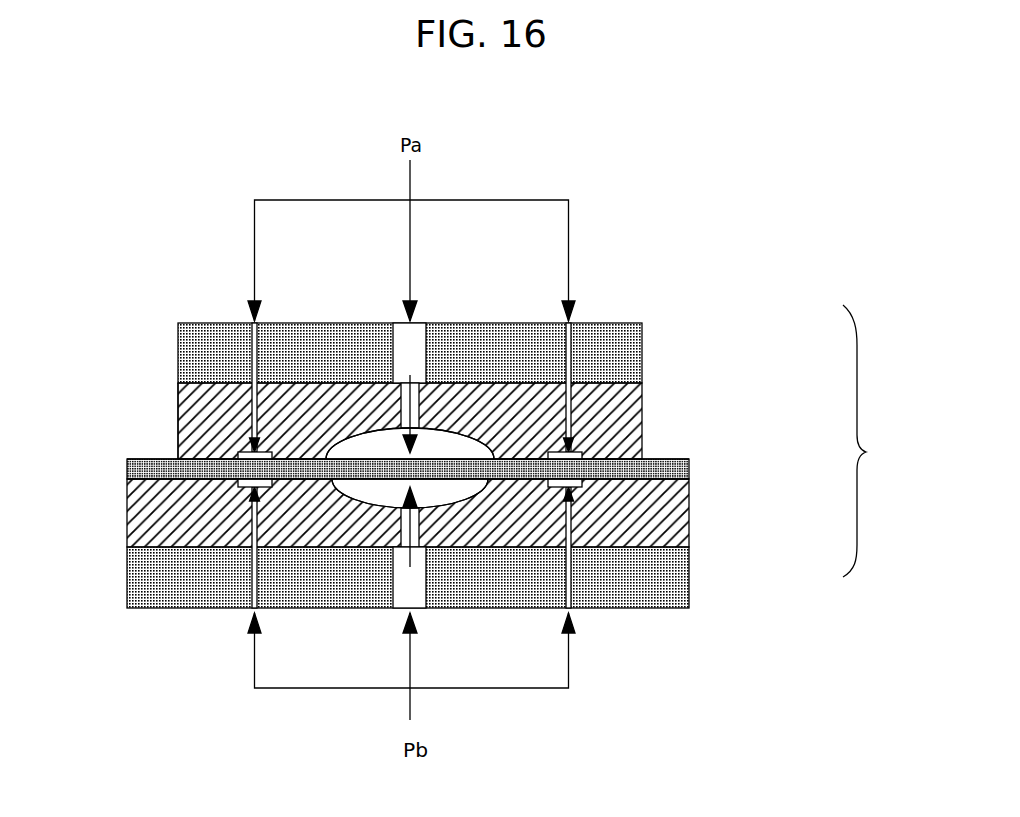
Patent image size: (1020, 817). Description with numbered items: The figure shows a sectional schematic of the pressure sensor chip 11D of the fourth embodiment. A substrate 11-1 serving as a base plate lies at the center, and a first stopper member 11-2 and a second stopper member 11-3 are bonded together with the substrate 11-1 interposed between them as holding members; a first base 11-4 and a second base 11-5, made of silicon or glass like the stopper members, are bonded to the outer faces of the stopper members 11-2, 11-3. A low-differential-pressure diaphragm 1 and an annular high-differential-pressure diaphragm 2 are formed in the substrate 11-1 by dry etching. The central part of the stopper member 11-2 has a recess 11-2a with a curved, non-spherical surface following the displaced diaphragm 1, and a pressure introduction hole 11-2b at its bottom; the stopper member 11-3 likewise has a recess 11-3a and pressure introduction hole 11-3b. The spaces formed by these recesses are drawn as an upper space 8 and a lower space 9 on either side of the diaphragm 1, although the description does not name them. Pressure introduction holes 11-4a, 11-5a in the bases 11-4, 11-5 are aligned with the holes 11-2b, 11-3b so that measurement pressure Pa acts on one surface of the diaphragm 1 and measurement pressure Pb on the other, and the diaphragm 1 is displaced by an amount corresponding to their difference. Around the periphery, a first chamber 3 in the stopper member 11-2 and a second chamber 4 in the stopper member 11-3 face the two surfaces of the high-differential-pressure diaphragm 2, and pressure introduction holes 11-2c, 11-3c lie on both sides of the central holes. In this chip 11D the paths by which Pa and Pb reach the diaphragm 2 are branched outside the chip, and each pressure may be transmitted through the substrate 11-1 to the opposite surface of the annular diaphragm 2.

The low-differential-pressure diaphragm 1 is at (353, 490).
The high-differential-pressure diaphragm 2 is at (197, 497).
The first chamber 3 is at (238, 455).
The second chamber 4 is at (197, 523).
The first pressure chamber 8 is at (427, 448).
The second pressure chamber 9 is at (372, 495).
The substrate 11-1 is at (690, 467).
The first stopper member 11-2 is at (620, 425).
The recess 11-2a is at (452, 442).
The pressure introduction hole 11-2b is at (402, 422).
The pressure introduction hole 11-2c is at (186, 406).
The second stopper member 11-3 is at (673, 520).
The recess 11-3a is at (453, 500).
The pressure introduction hole 11-3b is at (398, 518).
The pressure introduction hole 11-3c is at (580, 487).
The first base 11-4 is at (618, 352).
The pressure introduction hole 11-4a is at (408, 343).
The second base 11-5 is at (680, 563).
The pressure introduction hole 11-5a is at (400, 580).
The pressure sensor chip 11D is at (866, 452).